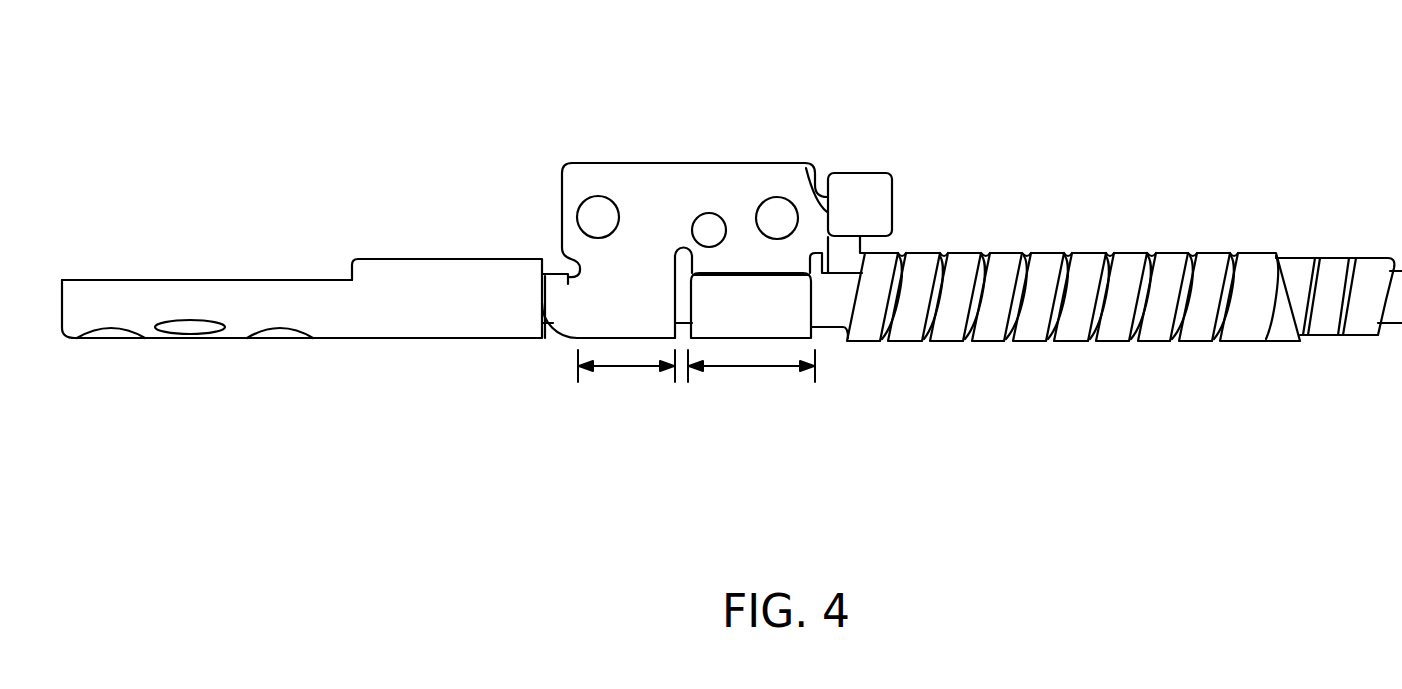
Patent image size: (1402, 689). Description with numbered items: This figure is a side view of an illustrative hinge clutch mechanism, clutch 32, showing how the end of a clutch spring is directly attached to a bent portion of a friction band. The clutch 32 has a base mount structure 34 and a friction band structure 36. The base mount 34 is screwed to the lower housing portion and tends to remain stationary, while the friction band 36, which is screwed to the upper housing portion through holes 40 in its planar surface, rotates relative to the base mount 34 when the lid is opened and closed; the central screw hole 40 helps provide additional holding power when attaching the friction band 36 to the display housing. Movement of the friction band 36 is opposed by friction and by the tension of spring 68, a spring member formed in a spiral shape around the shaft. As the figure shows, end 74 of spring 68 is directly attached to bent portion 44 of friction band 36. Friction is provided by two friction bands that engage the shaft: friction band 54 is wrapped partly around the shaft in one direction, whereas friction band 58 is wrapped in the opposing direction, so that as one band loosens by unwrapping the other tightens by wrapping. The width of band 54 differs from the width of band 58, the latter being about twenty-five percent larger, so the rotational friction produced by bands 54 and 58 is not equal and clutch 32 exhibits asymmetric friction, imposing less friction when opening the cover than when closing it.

The clutch 32 is at (1101, 48).
The base mount structure 34 is at (353, 325).
The friction band structure 36 is at (583, 181).
The holes 40 is at (709, 222).
The bent portion 44 is at (883, 218).
The friction band 54 is at (569, 285).
The friction band 58 is at (775, 313).
The spring 68 is at (1088, 263).
The end 74 is at (806, 168).